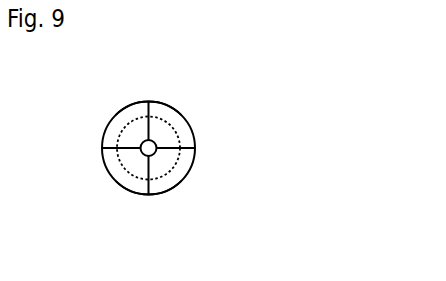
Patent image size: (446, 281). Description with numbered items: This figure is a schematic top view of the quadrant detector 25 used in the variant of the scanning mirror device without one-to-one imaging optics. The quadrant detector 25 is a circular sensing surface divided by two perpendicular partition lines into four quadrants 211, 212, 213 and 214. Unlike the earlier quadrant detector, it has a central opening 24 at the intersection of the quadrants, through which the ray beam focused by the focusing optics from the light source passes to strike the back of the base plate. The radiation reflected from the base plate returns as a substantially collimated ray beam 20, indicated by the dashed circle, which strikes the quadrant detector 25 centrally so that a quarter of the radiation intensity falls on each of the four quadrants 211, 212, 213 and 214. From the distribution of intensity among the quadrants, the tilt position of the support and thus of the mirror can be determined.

The collimated ray beam 20 is at (178, 134).
The central opening 24 is at (140, 153).
The quadrant detector 25 is at (157, 104).
The first quadrant 211 is at (182, 122).
The second quadrant 212 is at (118, 121).
The third quadrant 213 is at (122, 181).
The fourth quadrant 214 is at (177, 180).